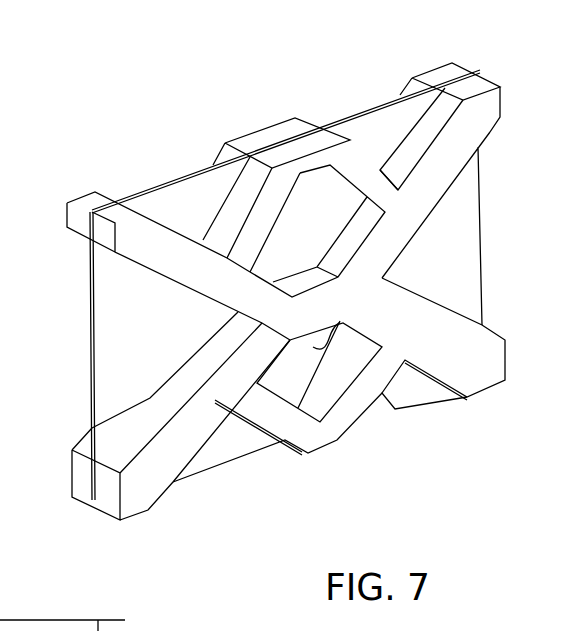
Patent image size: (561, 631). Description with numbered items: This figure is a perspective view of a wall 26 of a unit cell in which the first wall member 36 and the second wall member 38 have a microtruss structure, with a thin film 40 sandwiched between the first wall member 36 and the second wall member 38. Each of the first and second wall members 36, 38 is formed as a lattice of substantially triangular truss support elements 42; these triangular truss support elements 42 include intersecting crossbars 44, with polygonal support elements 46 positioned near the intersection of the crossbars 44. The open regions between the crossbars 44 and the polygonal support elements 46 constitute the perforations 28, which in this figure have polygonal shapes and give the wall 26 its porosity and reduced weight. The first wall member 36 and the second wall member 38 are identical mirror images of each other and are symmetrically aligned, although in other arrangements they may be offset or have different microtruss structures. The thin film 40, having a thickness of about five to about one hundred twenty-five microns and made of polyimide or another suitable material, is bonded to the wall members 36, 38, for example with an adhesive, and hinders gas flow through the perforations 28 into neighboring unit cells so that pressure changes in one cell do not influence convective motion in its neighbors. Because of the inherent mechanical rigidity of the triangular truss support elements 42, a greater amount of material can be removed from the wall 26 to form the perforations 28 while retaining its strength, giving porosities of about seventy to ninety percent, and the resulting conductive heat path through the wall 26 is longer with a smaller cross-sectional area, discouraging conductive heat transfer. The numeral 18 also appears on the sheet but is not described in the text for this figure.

The wall 26 is at (231, 108).
The second wall member 38 is at (450, 72).
The first wall member 36 is at (473, 90).
The crossbar 44 is at (440, 165).
The polygonal support element 46 is at (355, 173).
The perforation 28 is at (343, 323).
The thin film 40 is at (122, 302).
The triangular truss support element 42 is at (473, 360).
The lens element (partial) 18 is at (7, 620).